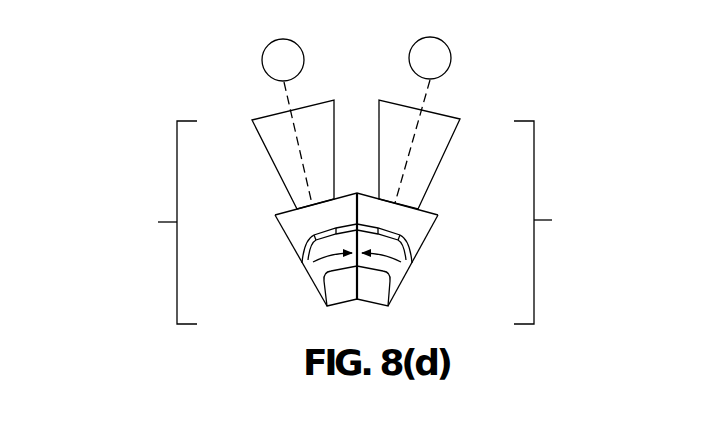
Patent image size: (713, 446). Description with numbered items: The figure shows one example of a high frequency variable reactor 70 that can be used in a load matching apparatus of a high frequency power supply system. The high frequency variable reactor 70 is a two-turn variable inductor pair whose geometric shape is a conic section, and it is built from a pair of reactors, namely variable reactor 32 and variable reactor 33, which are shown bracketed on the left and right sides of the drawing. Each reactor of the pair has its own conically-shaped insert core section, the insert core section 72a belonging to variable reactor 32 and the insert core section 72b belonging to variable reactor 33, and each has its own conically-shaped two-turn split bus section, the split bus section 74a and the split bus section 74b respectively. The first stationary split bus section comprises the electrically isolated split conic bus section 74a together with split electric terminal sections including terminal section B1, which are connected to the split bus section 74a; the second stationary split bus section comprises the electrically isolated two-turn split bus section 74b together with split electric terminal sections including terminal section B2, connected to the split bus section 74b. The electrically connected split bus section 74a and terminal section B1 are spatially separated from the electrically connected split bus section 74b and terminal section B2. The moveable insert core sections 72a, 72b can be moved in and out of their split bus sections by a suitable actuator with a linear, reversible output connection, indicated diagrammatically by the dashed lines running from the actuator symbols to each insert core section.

The high frequency variable reactor 70 is at (540, 64).
The conically-shaped insert core section 72a is at (302, 168).
The conically-shaped insert core section 72b is at (425, 158).
The conically-shaped two-turn split bus section 74a is at (302, 273).
The conically-shaped two-turn split bus section 74b is at (411, 266).
The split electric terminal section B1 is at (315, 259).
The split electric terminal section B2 is at (399, 261).
The variable reactor 32 is at (105, 222).
The variable reactor 33 is at (606, 222).